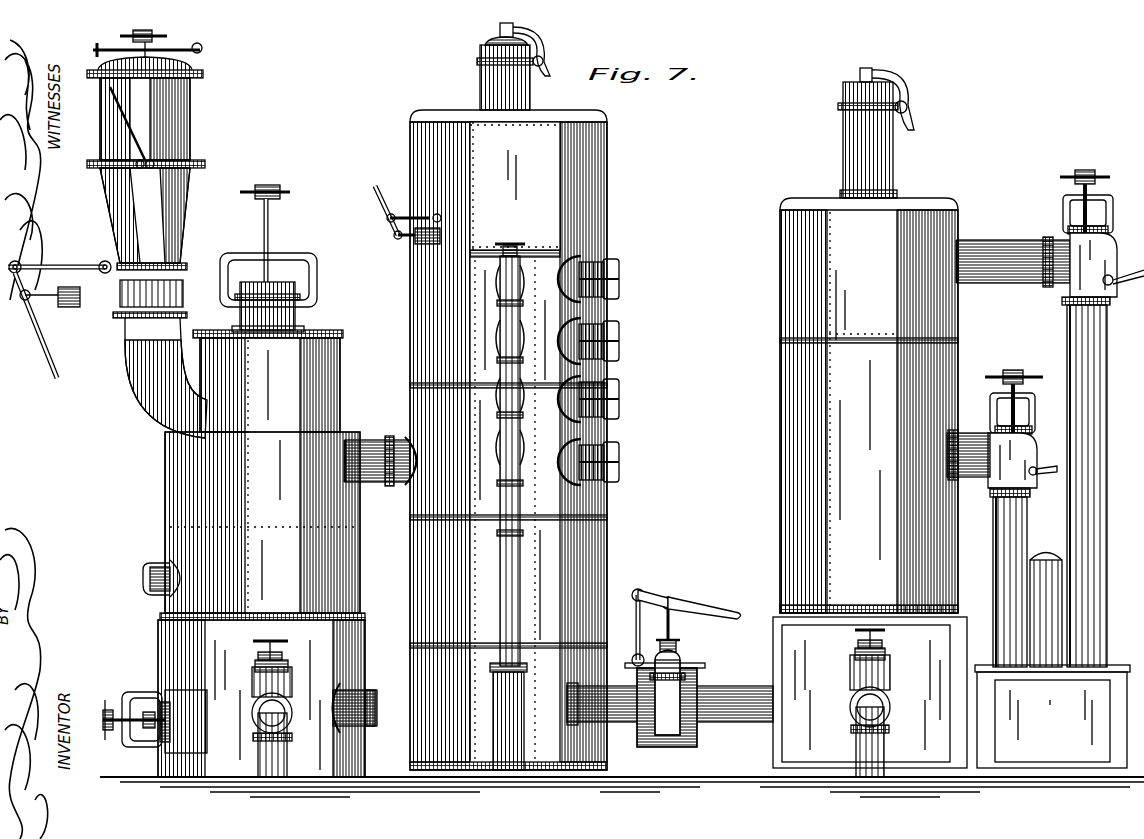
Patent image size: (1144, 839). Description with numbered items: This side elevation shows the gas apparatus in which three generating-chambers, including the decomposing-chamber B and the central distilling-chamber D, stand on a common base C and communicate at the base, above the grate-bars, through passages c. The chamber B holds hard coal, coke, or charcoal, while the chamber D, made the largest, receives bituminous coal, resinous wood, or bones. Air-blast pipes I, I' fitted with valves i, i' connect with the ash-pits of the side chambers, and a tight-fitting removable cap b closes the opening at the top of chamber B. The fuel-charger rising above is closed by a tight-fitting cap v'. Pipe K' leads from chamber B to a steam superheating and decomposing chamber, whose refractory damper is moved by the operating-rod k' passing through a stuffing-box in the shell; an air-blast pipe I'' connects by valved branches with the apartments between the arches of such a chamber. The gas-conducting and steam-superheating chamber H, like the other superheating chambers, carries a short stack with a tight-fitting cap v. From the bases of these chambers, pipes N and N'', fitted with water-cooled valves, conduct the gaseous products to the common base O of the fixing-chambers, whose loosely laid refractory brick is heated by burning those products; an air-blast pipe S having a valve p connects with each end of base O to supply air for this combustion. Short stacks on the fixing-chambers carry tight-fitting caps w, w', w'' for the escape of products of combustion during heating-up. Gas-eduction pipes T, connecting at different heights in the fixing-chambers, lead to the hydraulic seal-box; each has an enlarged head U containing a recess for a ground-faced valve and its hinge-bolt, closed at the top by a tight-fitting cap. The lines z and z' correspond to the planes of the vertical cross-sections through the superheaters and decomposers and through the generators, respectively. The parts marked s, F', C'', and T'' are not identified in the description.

The tight-fitting cap v' is at (147, 44).
The air-blast pipe I is at (145, 160).
The section line z is at (138, 165).
The section line z' is at (169, 213).
The valve i is at (97, 319).
The tight-fitting removable cap b is at (298, 282).
The generating-chamber (decomposing-chamber) B is at (262, 471).
The common base C is at (251, 695).
The valve i' is at (272, 669).
The air-blast pipe I' is at (279, 735).
The side pipe stub s is at (390, 715).
The distilling-chamber D is at (377, 441).
The pipe K' is at (399, 472).
The tight-fitting cap v is at (508, 66).
The gas-conducting and steam-superheating chamber H is at (517, 440).
The upper compartment of tower H F' is at (515, 186).
The operating-rod k' is at (408, 215).
The air-blast pipe I'' is at (508, 507).
The passage c is at (612, 292).
The pipe N'' is at (670, 691).
The tight-fitting cap w' is at (683, 668).
The tight-fitting cap w'' is at (868, 133).
The third tower C'' is at (869, 405).
The base of fixing-chambers O is at (870, 692).
The valve p is at (870, 660).
The air-blast pipe S is at (876, 732).
The enlarged head U is at (1062, 244).
The tight-fitting cap w is at (1102, 233).
The descending pipe T'' is at (1070, 482).
The gas-eduction pipe T is at (1002, 518).
The pipe N is at (1052, 716).